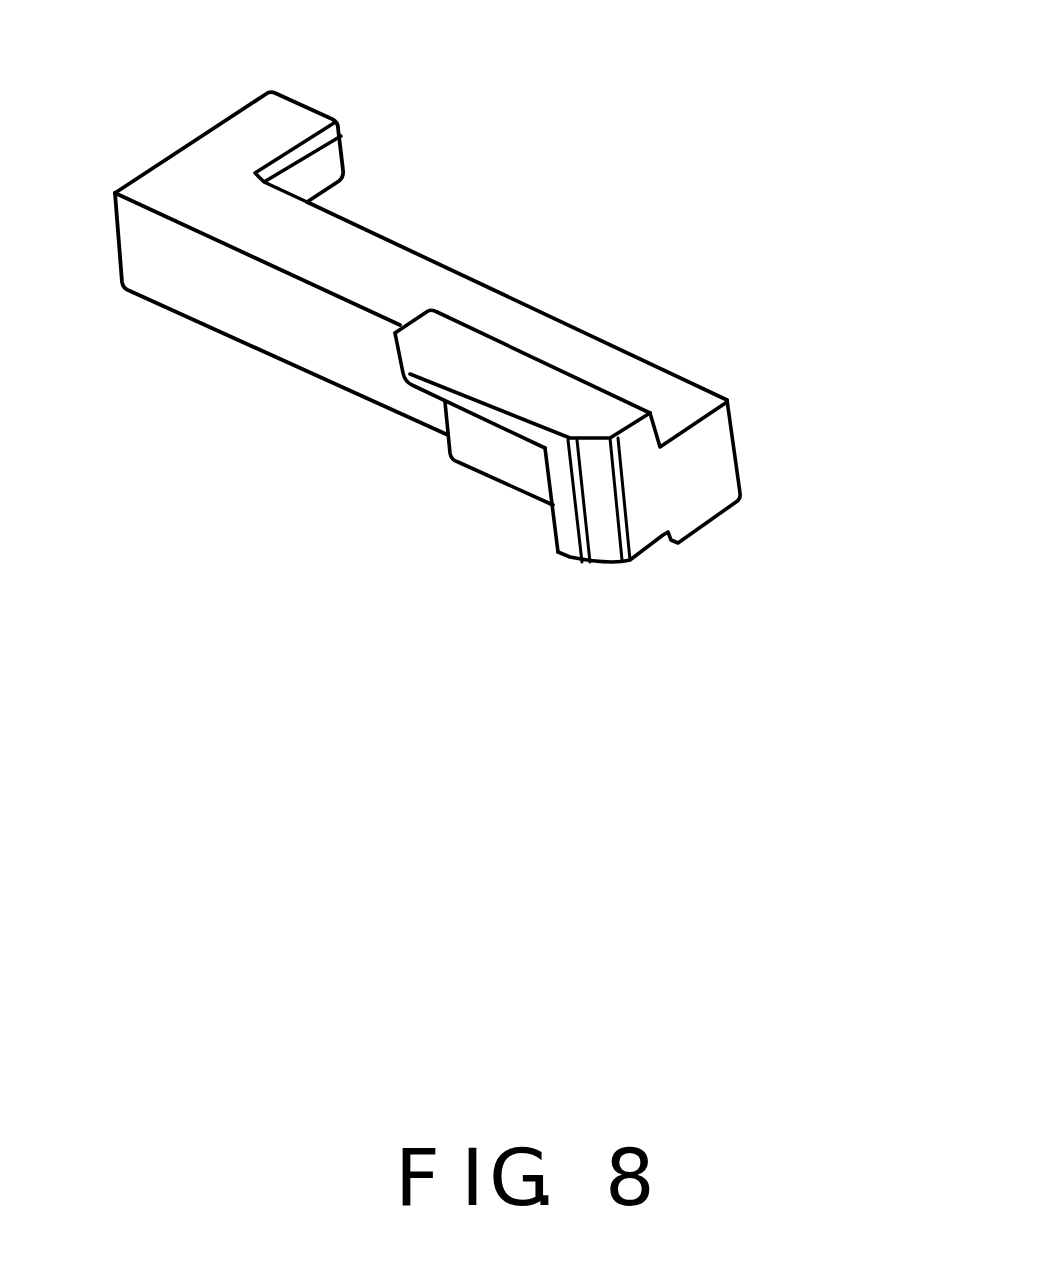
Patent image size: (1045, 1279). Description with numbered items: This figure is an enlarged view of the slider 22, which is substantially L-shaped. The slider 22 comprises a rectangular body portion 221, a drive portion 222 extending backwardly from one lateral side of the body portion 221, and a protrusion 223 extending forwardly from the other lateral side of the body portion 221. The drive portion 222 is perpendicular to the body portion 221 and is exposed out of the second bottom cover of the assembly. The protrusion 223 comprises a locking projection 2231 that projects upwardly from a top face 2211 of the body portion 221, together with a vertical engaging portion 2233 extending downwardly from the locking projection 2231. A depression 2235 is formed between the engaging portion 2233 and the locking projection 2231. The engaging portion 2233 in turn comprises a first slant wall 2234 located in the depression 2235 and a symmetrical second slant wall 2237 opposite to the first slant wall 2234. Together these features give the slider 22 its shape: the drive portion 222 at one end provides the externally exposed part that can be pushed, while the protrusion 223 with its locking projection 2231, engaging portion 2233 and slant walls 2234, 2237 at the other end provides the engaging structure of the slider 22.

The slider 22 is at (154, 87).
The body portion 221 is at (388, 273).
The drive portion 222 is at (280, 123).
The top face 2211 is at (533, 337).
The protrusion 223 is at (643, 440).
The locking projection 2231 is at (447, 357).
The depression 2235 is at (475, 450).
The engaging portion 2233 is at (587, 562).
The first slant wall 2234 is at (566, 506).
The second slant wall 2237 is at (597, 508).